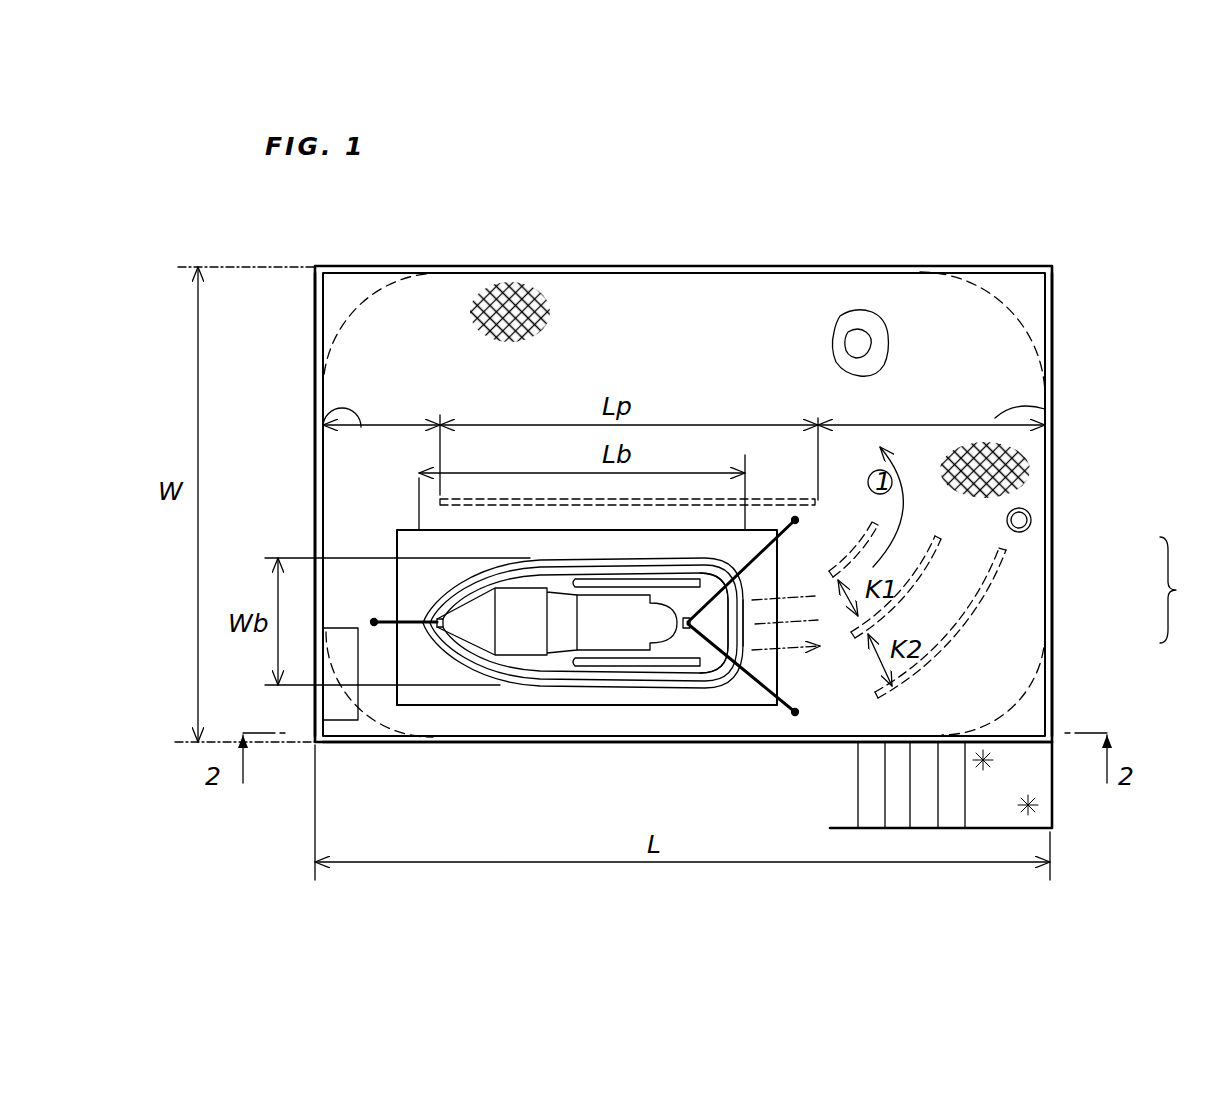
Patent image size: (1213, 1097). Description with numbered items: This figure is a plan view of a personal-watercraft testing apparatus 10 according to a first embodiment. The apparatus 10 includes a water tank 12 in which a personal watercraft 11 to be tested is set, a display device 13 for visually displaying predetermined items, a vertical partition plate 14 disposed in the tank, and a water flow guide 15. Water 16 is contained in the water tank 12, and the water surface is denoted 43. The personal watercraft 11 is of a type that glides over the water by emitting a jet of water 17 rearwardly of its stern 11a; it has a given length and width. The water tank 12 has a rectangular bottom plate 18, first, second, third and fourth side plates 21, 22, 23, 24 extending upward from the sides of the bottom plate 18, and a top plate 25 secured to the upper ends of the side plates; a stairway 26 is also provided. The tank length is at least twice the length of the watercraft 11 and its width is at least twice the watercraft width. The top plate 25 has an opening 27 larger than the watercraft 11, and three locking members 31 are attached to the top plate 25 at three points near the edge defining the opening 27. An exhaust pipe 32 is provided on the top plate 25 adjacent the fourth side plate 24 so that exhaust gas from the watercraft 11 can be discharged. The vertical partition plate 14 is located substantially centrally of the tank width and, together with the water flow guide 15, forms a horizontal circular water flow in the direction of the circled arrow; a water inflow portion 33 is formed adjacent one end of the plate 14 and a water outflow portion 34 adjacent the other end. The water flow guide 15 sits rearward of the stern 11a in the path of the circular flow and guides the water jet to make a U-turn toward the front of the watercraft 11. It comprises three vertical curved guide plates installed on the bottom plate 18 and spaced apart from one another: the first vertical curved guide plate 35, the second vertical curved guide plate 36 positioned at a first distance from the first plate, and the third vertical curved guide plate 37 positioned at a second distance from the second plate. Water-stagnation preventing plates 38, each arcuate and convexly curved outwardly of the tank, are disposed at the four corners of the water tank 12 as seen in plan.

The personal-watercraft testing apparatus 10 is at (664, 240).
The personal watercraft 11 is at (440, 588).
The stern 11a is at (725, 668).
The water tank 12 is at (782, 262).
The display device 13 is at (335, 728).
The vertical partition plate 14 is at (771, 490).
The water flow guide 15 is at (1185, 590).
The water 16 is at (467, 700).
The jet of water 17 is at (765, 645).
The bottom plate 18 is at (857, 347).
The first side plate 21 is at (472, 266).
The second side plate 22 is at (545, 743).
The third side plate 23 is at (315, 357).
The fourth side plate 24 is at (1052, 440).
The top plate 25 is at (1030, 472).
The stairway 26 is at (1002, 775).
The opening 27 is at (633, 706).
The locking members 31 is at (797, 522).
The exhaust pipe 32 is at (1032, 518).
The water inflow portion 33 is at (1040, 405).
The water outflow portion 34 is at (340, 410).
The first vertical curved guide plate 35 is at (878, 527).
The second vertical curved guide plate 36 is at (935, 560).
The third vertical curved guide plate 37 is at (992, 622).
The water-stagnation preventing plates 38 is at (355, 312).
The water surface 43 is at (877, 325).